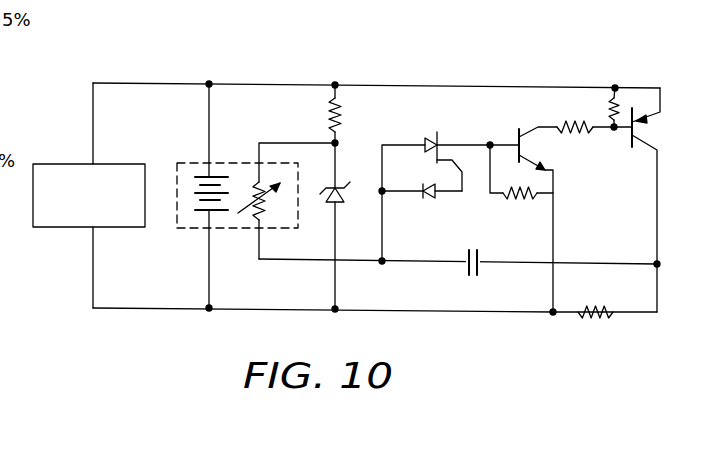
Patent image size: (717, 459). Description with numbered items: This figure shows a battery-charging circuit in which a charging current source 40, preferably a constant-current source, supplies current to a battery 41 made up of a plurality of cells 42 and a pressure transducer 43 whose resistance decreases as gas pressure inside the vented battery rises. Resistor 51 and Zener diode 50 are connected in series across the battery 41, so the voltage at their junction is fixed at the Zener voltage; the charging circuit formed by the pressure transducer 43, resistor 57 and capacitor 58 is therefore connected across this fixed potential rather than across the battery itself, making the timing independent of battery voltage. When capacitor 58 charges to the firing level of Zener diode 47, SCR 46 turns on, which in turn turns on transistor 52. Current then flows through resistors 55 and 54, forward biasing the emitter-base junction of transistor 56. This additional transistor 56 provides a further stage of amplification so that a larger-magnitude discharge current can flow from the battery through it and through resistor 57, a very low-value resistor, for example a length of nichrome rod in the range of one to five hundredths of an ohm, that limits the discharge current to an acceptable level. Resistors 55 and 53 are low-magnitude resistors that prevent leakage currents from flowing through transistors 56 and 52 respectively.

The charging current source 40 is at (127, 163).
The battery 41 is at (190, 162).
The cells 42 is at (200, 216).
The pressure transducer 43 is at (255, 222).
The SCR 46 is at (435, 141).
The Zener diode 47 is at (423, 199).
The Zener diode 50 is at (342, 188).
The resistor 51 is at (348, 113).
The transistor 52 is at (527, 130).
The resistor 53 is at (507, 199).
The resistor 54 is at (574, 133).
The resistor 55 is at (610, 103).
The transistor 56 is at (647, 137).
The resistor 57 is at (610, 302).
The capacitor 58 is at (470, 278).